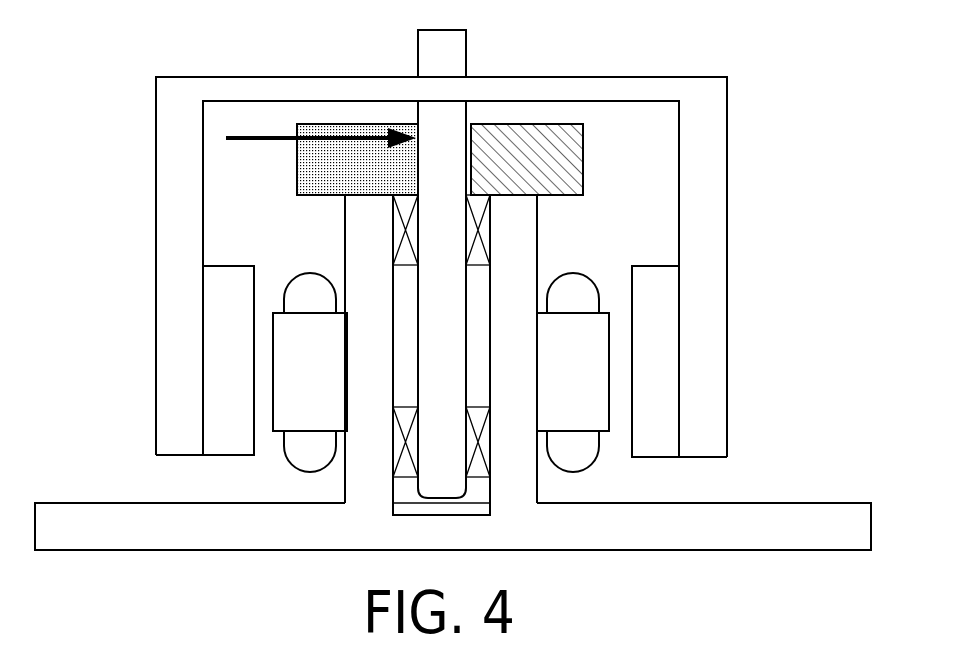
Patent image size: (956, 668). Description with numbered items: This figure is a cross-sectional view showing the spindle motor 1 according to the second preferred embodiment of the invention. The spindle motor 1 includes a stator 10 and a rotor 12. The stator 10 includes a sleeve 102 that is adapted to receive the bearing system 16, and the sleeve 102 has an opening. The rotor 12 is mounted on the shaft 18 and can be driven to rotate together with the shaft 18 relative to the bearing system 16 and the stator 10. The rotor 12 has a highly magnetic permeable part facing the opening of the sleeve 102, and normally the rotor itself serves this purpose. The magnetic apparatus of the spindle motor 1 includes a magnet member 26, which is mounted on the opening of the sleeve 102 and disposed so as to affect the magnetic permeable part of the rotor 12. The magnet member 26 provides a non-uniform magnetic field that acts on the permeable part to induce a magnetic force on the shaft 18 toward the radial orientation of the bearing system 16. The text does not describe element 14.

The spindle motor 1 is at (774, 120).
The stator 10 is at (520, 256).
The rotor 12 is at (156, 213).
The base 14 is at (118, 503).
The bearing system 16 is at (384, 262).
The shaft 18 is at (418, 61).
The magnet member 26 is at (574, 166).
The sleeve 102 is at (490, 393).